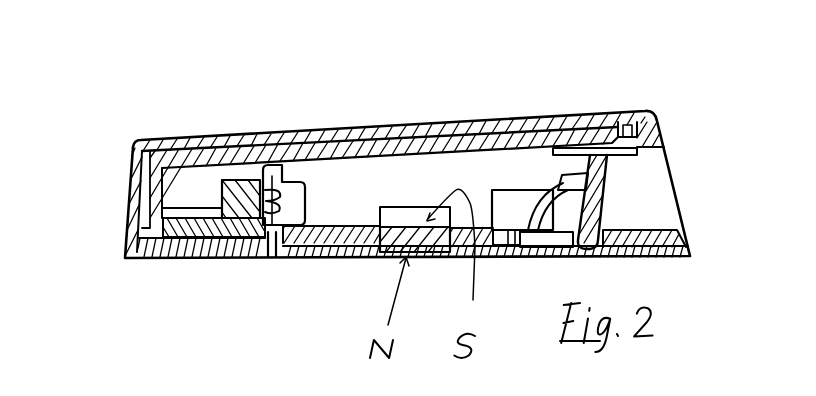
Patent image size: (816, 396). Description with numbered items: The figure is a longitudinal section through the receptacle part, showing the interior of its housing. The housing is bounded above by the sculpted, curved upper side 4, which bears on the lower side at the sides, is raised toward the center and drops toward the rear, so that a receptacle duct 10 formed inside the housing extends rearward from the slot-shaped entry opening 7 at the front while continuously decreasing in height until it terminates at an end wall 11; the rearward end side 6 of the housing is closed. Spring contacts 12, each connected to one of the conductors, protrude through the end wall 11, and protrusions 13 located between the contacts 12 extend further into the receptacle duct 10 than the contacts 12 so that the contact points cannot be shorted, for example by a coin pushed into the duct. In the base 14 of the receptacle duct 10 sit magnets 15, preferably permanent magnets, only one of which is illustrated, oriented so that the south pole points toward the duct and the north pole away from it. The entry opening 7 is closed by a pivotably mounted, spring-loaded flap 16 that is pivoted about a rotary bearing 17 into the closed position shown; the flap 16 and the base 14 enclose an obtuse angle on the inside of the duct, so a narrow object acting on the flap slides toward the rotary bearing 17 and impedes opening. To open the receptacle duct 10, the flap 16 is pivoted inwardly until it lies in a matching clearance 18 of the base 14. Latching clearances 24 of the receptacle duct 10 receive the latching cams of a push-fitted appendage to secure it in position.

The upper side 4 is at (450, 123).
The rearward end side 6 is at (52, 103).
The entry opening 7 is at (635, 196).
The receptacle duct 10 is at (383, 173).
The end wall 11 is at (283, 168).
The contacts 12 is at (283, 195).
The protrusions 13 is at (295, 200).
The base 14 is at (362, 250).
The magnets 15 is at (433, 253).
The flap 16 is at (603, 208).
The rotary bearing 17 is at (580, 250).
The clearance 18 is at (503, 230).
The latching clearances 24 is at (400, 210).